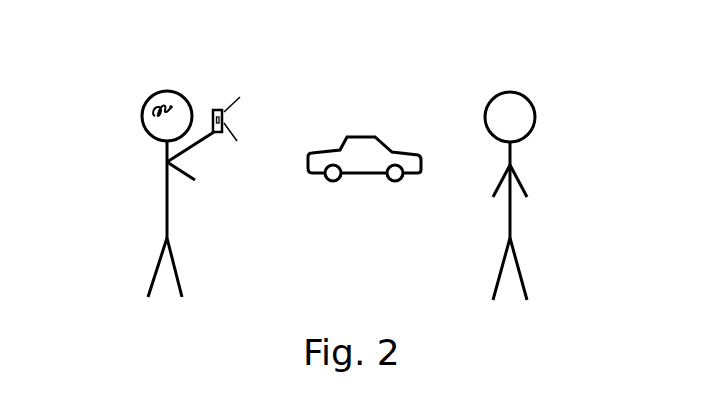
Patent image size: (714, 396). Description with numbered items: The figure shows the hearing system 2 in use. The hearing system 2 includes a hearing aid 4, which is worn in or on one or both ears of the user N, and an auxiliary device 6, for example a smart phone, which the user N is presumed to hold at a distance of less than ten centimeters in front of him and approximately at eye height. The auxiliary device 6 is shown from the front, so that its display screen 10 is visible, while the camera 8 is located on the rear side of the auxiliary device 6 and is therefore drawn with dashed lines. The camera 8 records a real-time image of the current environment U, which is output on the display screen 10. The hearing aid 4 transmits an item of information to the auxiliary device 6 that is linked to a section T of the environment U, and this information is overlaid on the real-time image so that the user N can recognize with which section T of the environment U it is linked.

The hearing system 2 is at (131, 89).
The hearing aid 4 is at (157, 109).
The auxiliary device 6 is at (216, 142).
The camera 8 is at (223, 117).
The display screen 10 is at (212, 110).
The user N is at (163, 185).
The section of the environment T is at (537, 137).
The environment U is at (405, 110).